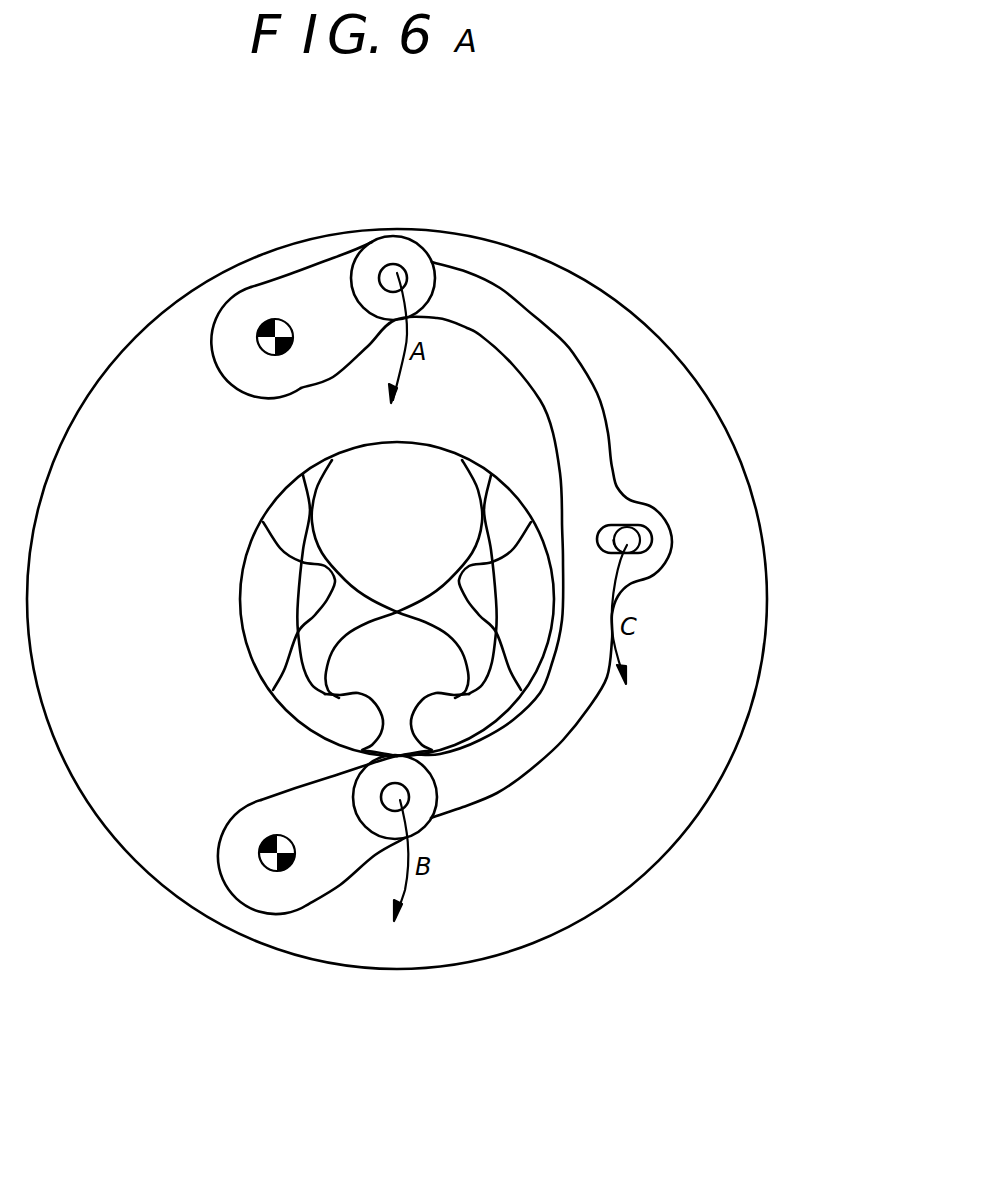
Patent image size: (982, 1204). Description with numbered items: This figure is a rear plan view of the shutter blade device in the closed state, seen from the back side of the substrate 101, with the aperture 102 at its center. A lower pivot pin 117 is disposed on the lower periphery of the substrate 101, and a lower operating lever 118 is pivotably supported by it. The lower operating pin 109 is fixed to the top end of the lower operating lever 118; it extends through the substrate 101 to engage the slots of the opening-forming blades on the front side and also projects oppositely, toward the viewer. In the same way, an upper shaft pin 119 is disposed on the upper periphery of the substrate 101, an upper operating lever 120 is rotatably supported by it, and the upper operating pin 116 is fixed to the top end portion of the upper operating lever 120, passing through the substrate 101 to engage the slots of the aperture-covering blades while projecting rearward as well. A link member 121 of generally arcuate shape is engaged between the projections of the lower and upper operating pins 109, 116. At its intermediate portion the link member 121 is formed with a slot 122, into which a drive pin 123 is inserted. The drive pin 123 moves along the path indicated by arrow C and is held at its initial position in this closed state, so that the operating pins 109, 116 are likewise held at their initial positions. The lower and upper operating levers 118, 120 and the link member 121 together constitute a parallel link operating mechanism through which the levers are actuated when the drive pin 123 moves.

The substrate 101 is at (687, 798).
The aperture 102 is at (258, 622).
The lower operating pin 109 is at (400, 795).
The upper operating pin 116 is at (397, 274).
The lower pivot pin 117 is at (260, 863).
The lower operating lever 118 is at (300, 893).
The upper shaft pin 119 is at (275, 337).
The upper operating lever 120 is at (290, 300).
The link member 121 is at (530, 323).
The slot 122 is at (647, 523).
The drive pin 123 is at (633, 542).